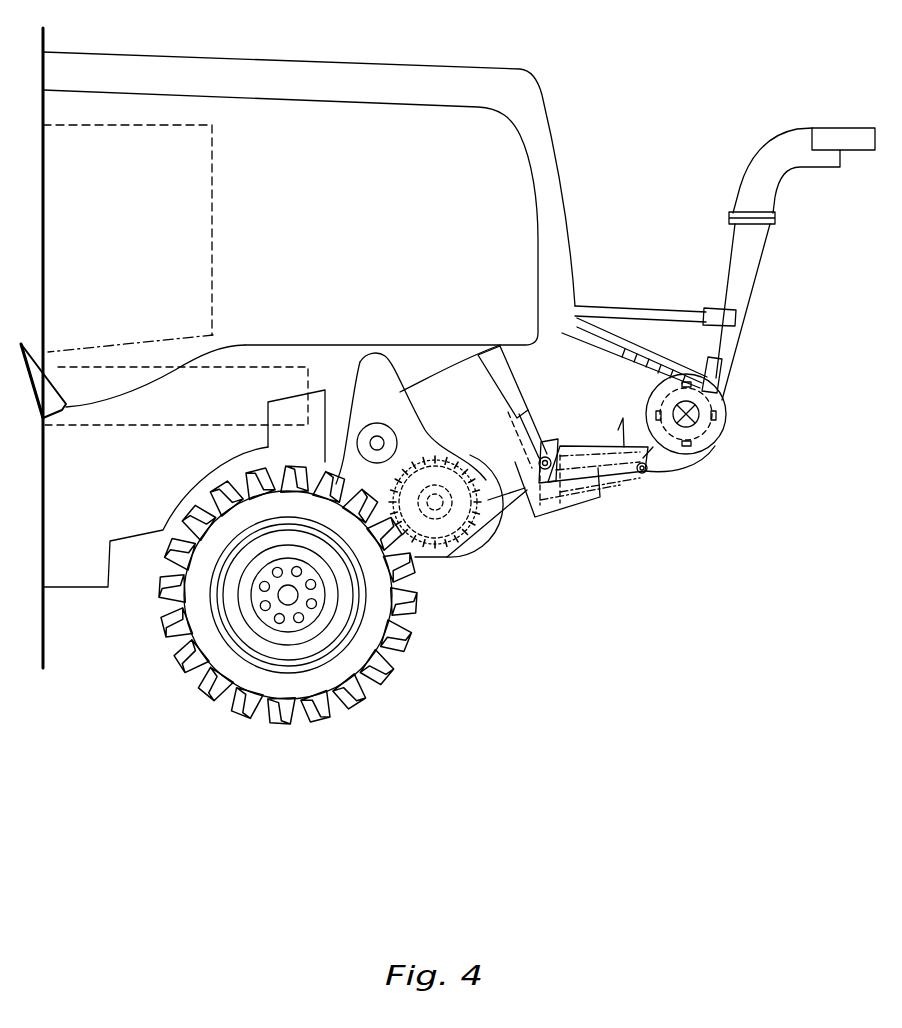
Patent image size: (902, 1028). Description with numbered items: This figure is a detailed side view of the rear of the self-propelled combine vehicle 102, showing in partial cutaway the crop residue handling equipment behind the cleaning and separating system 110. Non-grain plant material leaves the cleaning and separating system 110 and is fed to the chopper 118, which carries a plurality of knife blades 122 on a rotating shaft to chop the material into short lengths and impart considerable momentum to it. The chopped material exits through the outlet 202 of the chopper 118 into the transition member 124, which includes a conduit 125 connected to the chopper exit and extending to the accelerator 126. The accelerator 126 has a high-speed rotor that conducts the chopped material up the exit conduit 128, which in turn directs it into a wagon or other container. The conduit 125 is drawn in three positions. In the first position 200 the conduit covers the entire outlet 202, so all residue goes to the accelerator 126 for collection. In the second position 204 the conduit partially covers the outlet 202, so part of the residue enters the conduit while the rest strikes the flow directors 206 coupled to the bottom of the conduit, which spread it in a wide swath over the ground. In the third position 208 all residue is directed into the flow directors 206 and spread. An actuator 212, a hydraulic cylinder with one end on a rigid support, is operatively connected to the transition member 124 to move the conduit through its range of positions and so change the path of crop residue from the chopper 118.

The self-propelled combine vehicle 102 is at (533, 110).
The cleaning and separating system 110 is at (200, 163).
The chopper 118 is at (442, 528).
The knife blades 122 is at (440, 438).
The transition member 124 is at (622, 438).
The conduit 125 is at (641, 462).
The accelerator 126 is at (712, 449).
The exit conduit 128 is at (782, 148).
The first position 200 is at (630, 480).
The outlet 202 is at (500, 532).
The second position 204 is at (614, 456).
The flow directors 206 is at (580, 500).
The third position 208 is at (518, 420).
The actuator 212 is at (500, 371).